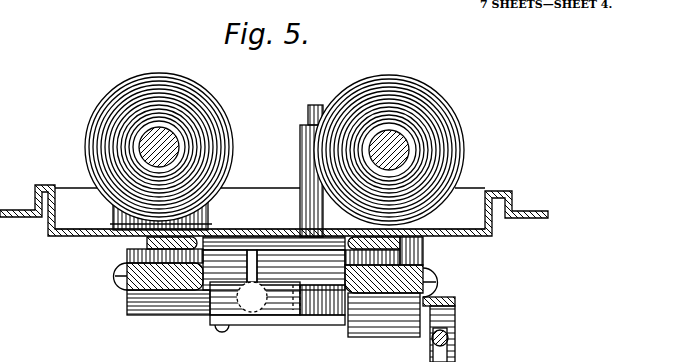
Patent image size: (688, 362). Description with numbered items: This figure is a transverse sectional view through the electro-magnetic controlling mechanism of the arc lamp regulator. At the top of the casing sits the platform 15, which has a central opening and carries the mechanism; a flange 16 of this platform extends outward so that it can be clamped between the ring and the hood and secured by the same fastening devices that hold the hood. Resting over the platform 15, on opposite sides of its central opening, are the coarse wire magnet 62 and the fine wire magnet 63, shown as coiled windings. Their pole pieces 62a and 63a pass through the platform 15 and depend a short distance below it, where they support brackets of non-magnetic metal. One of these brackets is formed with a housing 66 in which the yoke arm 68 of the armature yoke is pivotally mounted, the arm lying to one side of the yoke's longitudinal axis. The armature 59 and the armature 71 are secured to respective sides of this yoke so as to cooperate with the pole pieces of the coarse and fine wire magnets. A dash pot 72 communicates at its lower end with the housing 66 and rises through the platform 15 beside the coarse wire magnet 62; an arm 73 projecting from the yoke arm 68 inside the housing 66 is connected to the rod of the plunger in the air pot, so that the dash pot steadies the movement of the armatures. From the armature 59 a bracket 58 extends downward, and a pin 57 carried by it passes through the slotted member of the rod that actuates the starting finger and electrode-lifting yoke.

The platform 15 is at (476, 239).
The flange 16 is at (532, 220).
The pin 57 is at (448, 339).
The bracket 58 is at (455, 310).
The armature 59 is at (423, 256).
The coarse wire magnet 62 is at (438, 104).
The pole piece 62a is at (436, 237).
The fine wire magnet 63 is at (113, 99).
The pole piece 63a is at (130, 252).
The housing 66 is at (233, 258).
The yoke arm 68 is at (259, 311).
The armature 71 is at (118, 271).
The dash pot 72 is at (304, 156).
The arm 73 is at (297, 303).